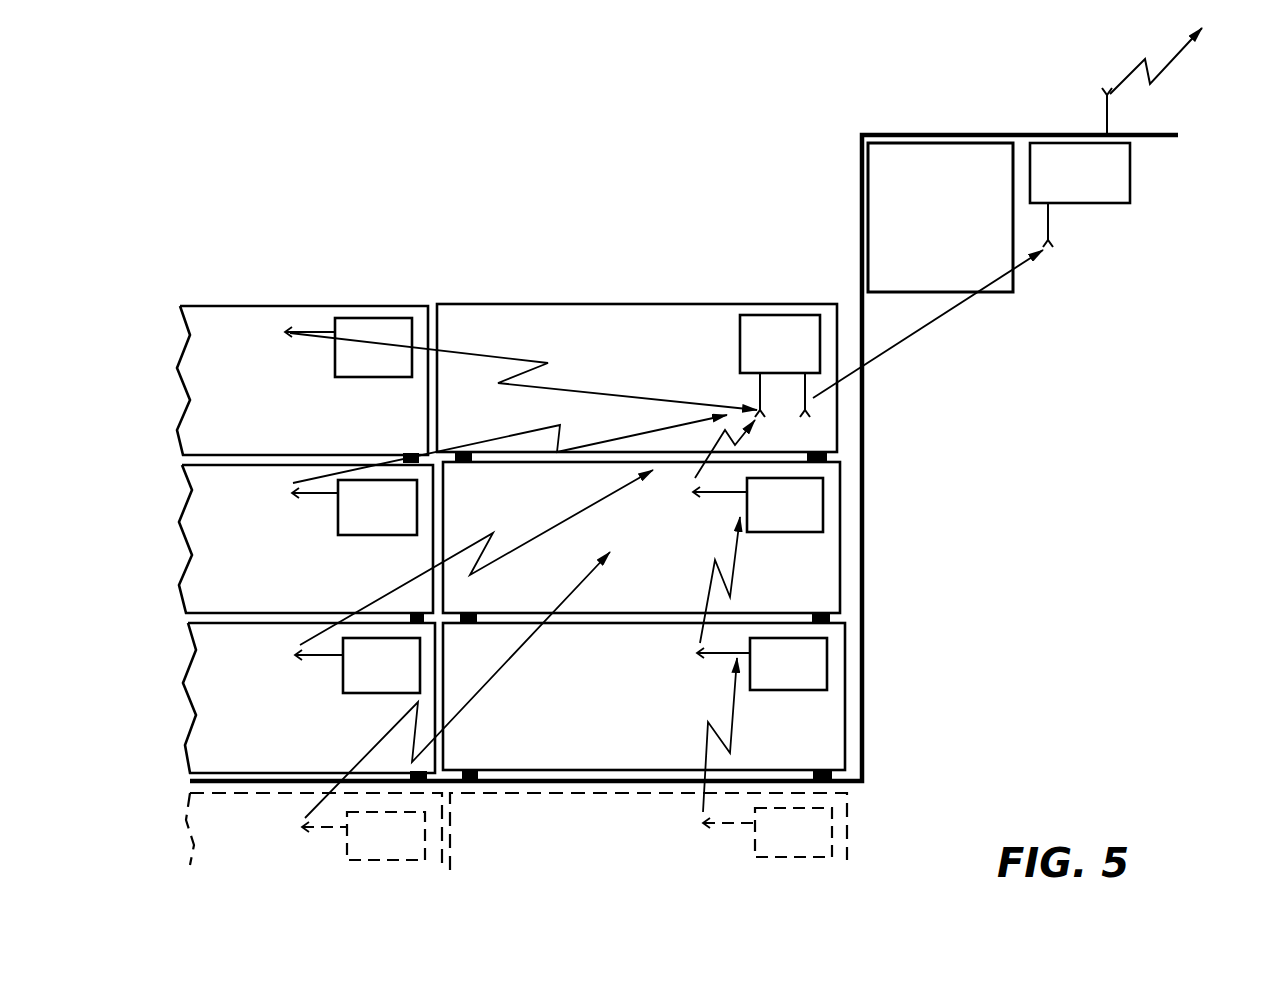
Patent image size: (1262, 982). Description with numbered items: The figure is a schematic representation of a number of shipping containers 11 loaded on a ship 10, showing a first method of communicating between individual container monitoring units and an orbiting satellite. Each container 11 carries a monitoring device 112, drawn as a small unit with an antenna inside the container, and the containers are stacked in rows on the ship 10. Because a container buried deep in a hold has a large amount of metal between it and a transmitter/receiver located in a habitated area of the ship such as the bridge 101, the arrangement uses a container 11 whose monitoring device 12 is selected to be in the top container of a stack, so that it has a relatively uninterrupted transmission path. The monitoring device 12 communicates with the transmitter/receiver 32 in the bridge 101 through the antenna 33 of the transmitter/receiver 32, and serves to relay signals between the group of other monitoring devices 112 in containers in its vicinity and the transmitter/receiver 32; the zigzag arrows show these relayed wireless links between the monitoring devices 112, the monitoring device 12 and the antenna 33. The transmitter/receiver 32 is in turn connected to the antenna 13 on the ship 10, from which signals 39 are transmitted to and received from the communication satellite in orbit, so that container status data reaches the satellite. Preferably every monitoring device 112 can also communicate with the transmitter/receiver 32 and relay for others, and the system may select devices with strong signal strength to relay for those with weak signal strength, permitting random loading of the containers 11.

The ship 10 is at (670, 182).
The container 11 is at (270, 306).
The monitoring device 12 is at (740, 348).
The antenna 13 is at (1112, 118).
The transmitter/receiver 32 is at (1130, 183).
The antenna 33 is at (1050, 220).
The signals 39 is at (1175, 62).
The bridge 101 is at (913, 133).
The monitoring devices 112 is at (350, 377).